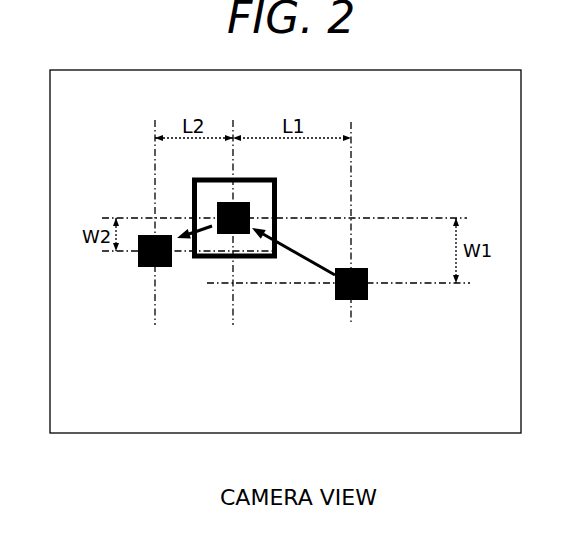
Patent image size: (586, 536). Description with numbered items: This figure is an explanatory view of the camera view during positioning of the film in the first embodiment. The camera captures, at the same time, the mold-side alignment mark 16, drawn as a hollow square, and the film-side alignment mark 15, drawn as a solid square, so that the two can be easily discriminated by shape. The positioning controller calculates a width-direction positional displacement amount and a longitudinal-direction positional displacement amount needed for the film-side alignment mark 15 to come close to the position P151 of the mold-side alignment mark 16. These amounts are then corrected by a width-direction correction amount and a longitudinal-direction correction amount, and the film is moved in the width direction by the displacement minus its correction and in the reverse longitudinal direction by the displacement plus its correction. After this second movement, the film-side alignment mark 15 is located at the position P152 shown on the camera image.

The film-side alignment mark 15 is at (370, 296).
The mold-side alignment mark 16 is at (276, 185).
The position of the mold-side alignment mark P151 is at (223, 235).
The position of the film-side alignment mark after second movement P152 is at (150, 268).